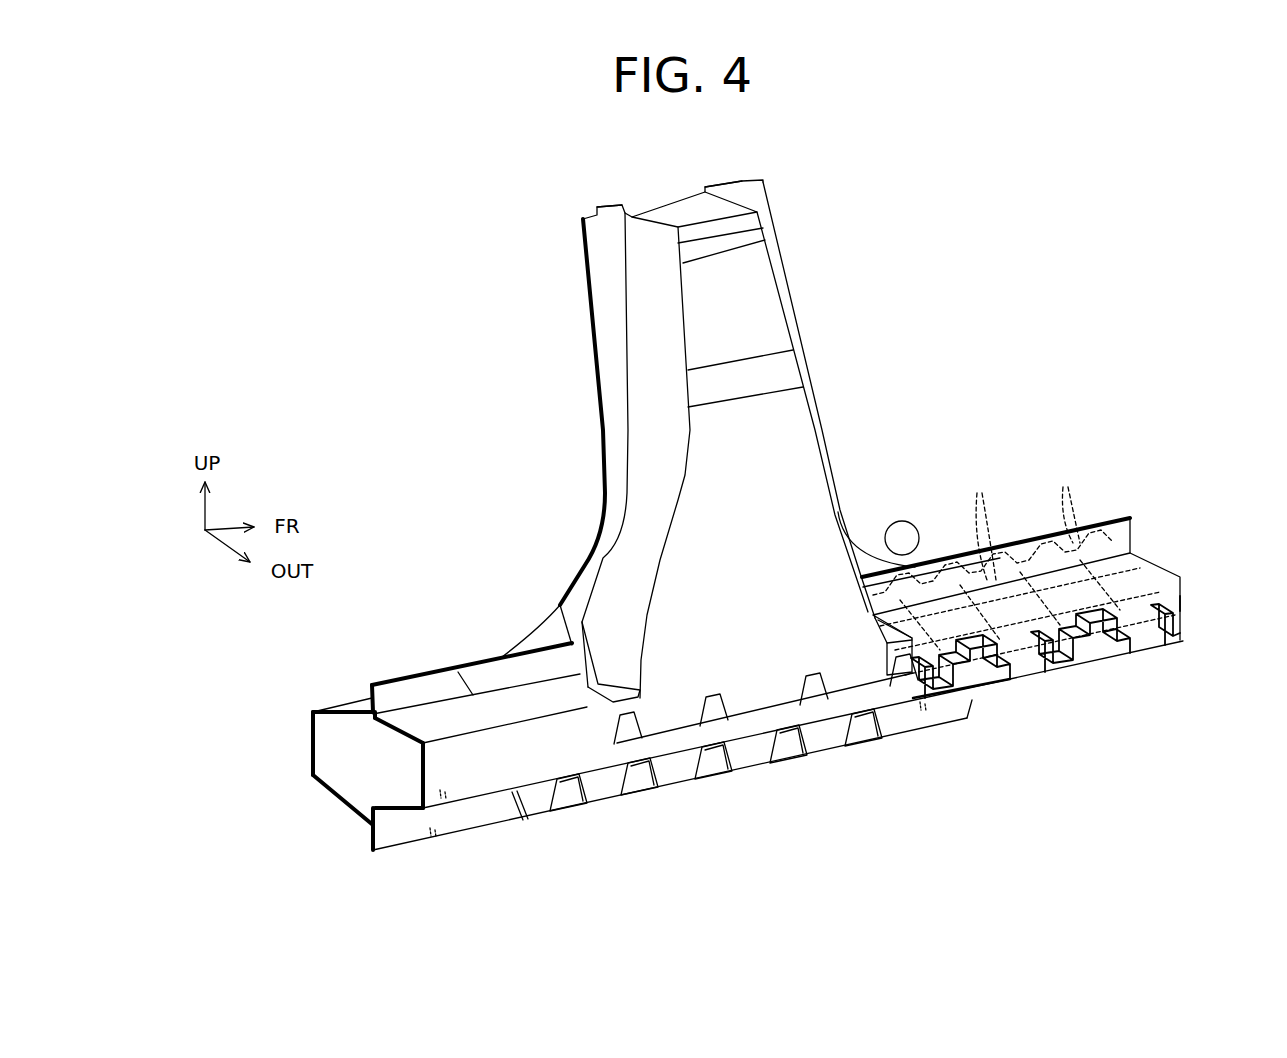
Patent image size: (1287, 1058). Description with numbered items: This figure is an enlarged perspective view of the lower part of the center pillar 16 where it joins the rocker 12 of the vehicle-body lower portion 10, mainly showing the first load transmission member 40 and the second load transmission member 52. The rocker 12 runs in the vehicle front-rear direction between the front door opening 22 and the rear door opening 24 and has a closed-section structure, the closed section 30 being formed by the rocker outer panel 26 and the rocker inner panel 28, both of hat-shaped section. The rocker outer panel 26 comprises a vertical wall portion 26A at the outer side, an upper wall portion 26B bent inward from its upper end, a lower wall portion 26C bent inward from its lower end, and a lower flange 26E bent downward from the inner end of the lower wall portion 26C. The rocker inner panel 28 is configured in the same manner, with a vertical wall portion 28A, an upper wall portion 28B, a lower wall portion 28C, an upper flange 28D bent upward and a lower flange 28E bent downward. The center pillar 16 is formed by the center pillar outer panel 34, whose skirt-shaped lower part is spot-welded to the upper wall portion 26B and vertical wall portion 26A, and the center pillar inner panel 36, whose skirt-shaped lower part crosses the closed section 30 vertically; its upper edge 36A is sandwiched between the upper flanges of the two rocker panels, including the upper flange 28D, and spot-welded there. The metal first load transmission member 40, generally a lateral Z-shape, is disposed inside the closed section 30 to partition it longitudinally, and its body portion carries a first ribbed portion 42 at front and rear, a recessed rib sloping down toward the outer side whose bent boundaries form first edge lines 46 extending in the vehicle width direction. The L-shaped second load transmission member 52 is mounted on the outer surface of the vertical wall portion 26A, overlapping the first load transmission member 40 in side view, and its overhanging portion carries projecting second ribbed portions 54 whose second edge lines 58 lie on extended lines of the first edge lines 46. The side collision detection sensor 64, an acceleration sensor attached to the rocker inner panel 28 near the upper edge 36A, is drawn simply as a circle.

The vehicle-body lower portion 10 is at (849, 797).
The rocker 12 is at (701, 744).
The center pillar 16 is at (803, 230).
The front door opening 22 is at (940, 366).
The rear door opening 24 is at (430, 427).
The rocker outer panel 26 is at (777, 754).
The vertical wall portion 26A is at (520, 770).
The upper wall portion 26B is at (445, 713).
The lower wall portion 26C is at (403, 810).
The lower flange 26E is at (463, 818).
The rocker inner panel 28 is at (321, 733).
The vertical wall portion 28A is at (310, 738).
The upper wall portion 28B is at (353, 695).
The lower wall portion 28C is at (320, 785).
The upper flange 28D is at (372, 687).
The lower flange 28E is at (367, 837).
The closed section 30 is at (372, 794).
The center pillar outer panel 34 is at (752, 293).
The center pillar inner panel 36 is at (666, 195).
The upper edge 36A is at (545, 635).
The first load transmission member 40 is at (1130, 572).
The first ribbed portion 42 is at (1074, 709).
The first edge line 46 is at (1020, 518).
The second load transmission member 52 is at (972, 713).
The second ribbed portion 54 is at (1010, 655).
The second edge line 58 is at (1017, 647).
The side collision detection sensor 64 is at (897, 523).